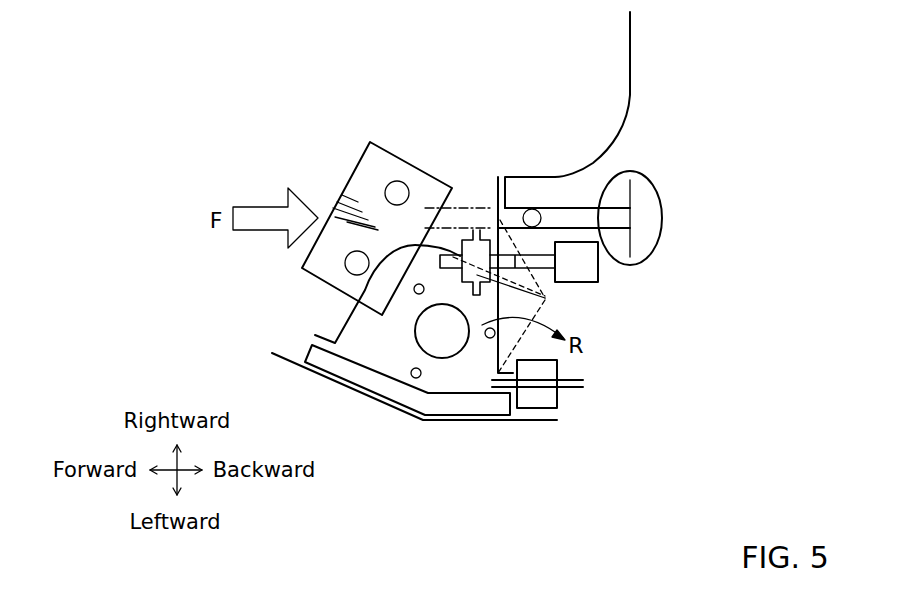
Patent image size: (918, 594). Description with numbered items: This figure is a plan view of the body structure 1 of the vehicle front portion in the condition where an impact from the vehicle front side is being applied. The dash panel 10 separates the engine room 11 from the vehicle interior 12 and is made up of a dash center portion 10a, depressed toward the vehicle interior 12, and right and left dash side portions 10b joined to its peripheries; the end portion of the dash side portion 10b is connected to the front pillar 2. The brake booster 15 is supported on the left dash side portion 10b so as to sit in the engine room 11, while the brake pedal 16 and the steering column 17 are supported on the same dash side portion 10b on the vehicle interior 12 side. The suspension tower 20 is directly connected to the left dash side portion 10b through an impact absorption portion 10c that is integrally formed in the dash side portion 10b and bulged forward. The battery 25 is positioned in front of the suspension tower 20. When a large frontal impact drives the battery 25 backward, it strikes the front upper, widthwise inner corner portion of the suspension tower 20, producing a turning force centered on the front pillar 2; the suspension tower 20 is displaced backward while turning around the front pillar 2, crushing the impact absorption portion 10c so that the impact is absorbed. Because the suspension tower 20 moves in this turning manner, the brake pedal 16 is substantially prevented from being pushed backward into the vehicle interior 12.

The body structure 1 is at (447, 139).
The front pillar 2 is at (541, 397).
The dash panel 10 is at (594, 242).
The dash center portion 10a is at (630, 52).
The dash side portion 10b is at (497, 347).
The impact absorption portion 10c is at (510, 352).
The engine room 11 is at (377, 101).
The vehicle interior 12 is at (791, 167).
The brake booster 15 is at (548, 303).
The brake pedal 16 is at (588, 272).
The steering column 17 is at (562, 218).
The suspension tower 20 is at (388, 335).
The battery 25 is at (363, 178).